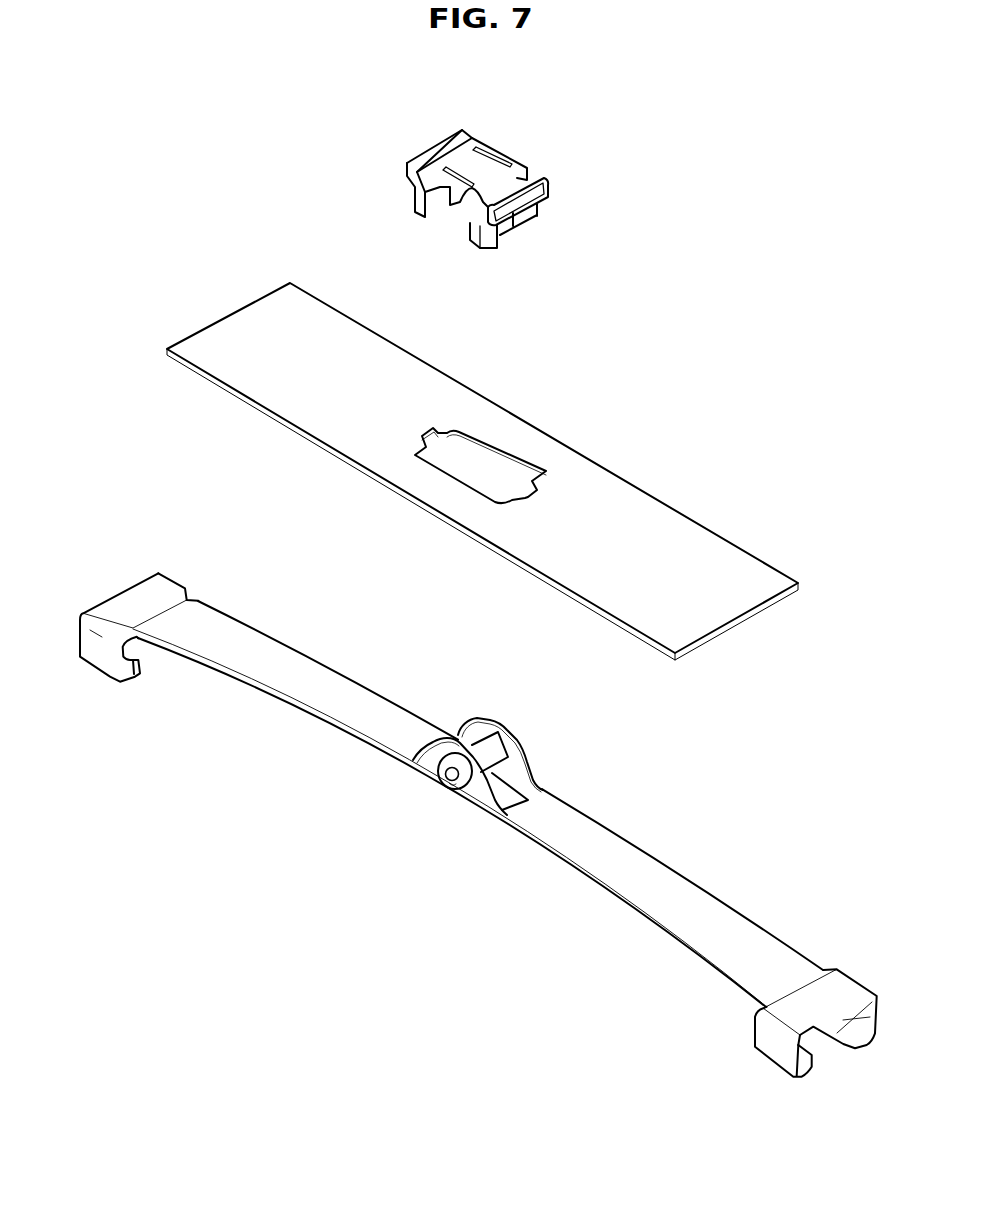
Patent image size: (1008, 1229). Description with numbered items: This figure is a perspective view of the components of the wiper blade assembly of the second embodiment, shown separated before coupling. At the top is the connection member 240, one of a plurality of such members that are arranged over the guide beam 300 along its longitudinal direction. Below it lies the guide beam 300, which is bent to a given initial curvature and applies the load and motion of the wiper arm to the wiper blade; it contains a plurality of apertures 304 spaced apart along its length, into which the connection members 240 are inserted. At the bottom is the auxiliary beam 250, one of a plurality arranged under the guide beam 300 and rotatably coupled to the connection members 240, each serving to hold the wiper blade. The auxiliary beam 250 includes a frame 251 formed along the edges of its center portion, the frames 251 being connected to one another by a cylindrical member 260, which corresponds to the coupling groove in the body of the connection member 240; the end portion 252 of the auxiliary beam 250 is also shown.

The connection member 240 is at (492, 163).
The guide beam 300 is at (680, 527).
The aperture 304 is at (488, 460).
The auxiliary beam 250 is at (648, 870).
The frame 251 is at (413, 758).
The hook end 252 is at (770, 1047).
The cylindrical member 260 is at (448, 787).